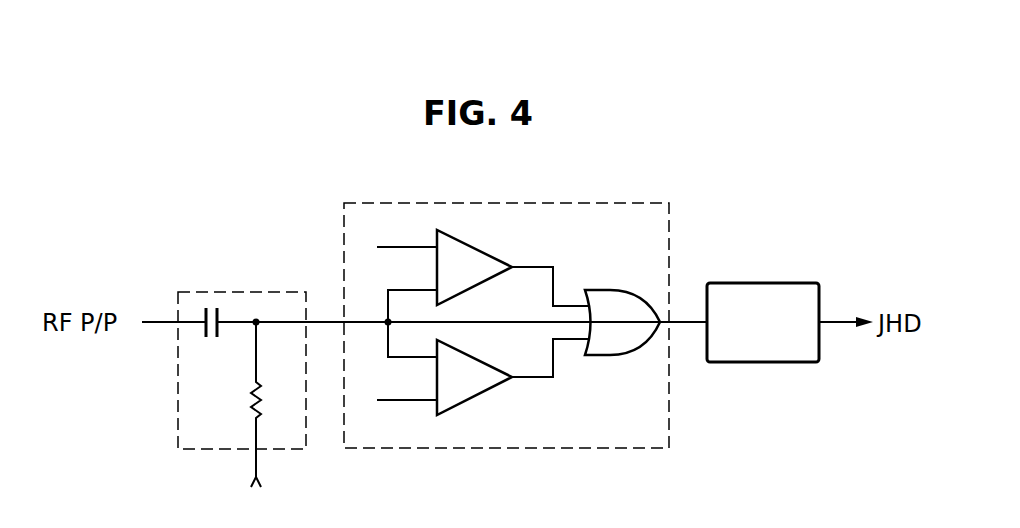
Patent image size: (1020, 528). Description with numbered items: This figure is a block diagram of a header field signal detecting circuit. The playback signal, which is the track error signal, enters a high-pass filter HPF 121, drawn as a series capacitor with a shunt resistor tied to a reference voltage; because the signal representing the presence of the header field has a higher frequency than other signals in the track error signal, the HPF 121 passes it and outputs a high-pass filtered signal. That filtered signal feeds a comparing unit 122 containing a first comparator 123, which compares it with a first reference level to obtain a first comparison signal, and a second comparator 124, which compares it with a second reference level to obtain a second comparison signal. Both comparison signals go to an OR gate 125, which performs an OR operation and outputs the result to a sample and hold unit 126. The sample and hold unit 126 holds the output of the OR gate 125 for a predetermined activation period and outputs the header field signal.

The high-pass filter HPF 121 is at (243, 290).
The comparing unit 122 is at (506, 310).
The first comparator COMP1 123 is at (477, 249).
The second comparator COMP2 124 is at (477, 398).
The OR gate 125 is at (609, 357).
The sample and hold unit 126 is at (767, 283).